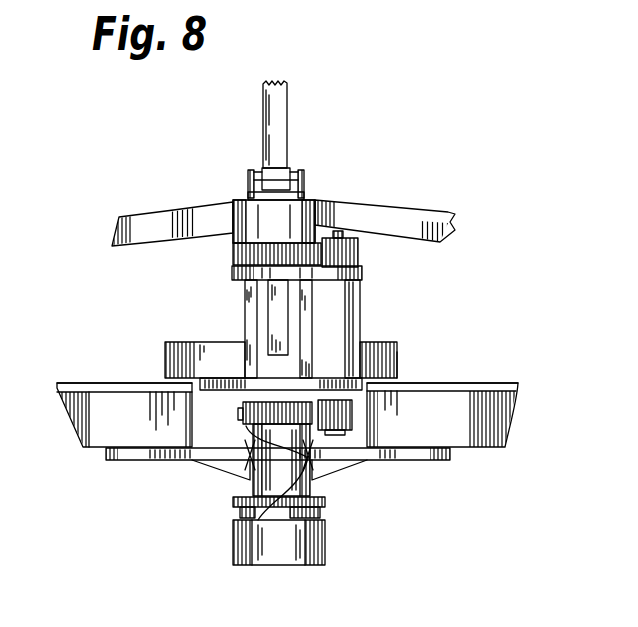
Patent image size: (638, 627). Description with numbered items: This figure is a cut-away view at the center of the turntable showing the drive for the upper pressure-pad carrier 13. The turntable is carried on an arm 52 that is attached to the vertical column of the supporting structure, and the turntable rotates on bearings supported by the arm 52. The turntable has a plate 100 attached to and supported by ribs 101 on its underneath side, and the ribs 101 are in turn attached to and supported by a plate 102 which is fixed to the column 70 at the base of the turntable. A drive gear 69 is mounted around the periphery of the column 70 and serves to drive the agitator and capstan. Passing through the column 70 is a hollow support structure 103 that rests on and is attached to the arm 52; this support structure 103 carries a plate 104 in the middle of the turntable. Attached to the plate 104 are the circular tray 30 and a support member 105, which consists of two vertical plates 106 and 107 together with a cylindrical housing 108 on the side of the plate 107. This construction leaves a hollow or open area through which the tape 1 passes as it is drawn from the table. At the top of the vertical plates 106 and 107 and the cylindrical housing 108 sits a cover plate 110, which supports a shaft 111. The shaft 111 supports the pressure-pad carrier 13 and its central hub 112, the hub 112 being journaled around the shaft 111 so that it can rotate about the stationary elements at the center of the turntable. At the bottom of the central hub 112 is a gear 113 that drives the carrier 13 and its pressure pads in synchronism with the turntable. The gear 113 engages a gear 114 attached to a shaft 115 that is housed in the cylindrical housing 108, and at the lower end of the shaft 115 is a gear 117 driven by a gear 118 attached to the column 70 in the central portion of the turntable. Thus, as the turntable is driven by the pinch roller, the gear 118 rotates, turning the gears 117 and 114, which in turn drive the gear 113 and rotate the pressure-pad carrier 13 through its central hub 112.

The tape 1 is at (287, 116).
The shaft 111 is at (270, 193).
The central hub 112 is at (318, 202).
The pressure-pad carrier 13 is at (186, 209).
The shaft 115 is at (340, 233).
The gear 114 is at (360, 252).
The gear 113 is at (232, 250).
The cover plate 110 is at (364, 273).
The vertical plate 106 is at (246, 312).
The vertical plate 107 is at (305, 312).
The support member 105 is at (360, 320).
The plate 104 is at (207, 372).
The cylindrical housing 108 is at (366, 347).
The circular tray 30 is at (398, 366).
The hollow support structure 103 is at (249, 388).
The plate 100 is at (484, 383).
The ribs 101 is at (92, 424).
The plate 102 is at (168, 458).
The gear 118 is at (244, 412).
The gear 117 is at (353, 417).
The column 70 is at (310, 486).
The drive gear 69 is at (326, 502).
The arm 52 is at (325, 548).